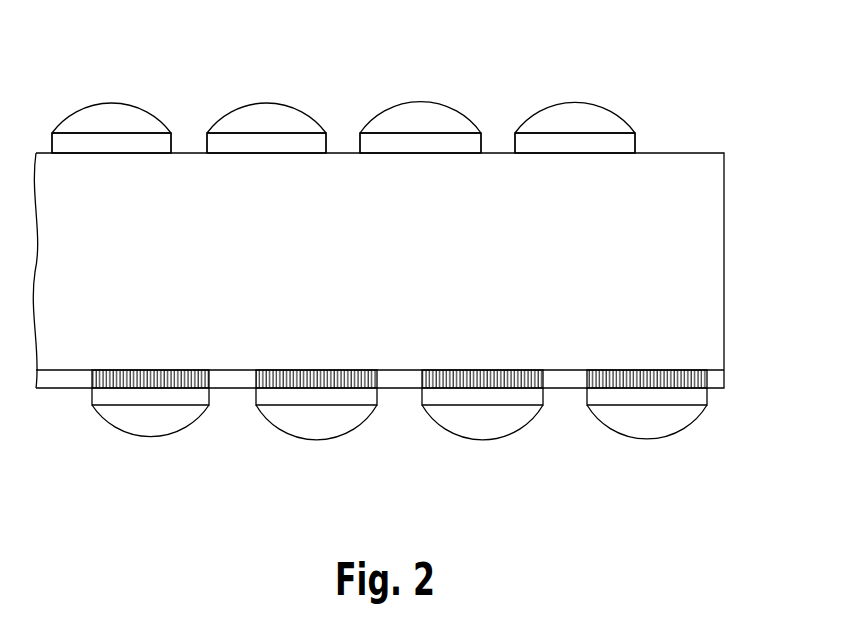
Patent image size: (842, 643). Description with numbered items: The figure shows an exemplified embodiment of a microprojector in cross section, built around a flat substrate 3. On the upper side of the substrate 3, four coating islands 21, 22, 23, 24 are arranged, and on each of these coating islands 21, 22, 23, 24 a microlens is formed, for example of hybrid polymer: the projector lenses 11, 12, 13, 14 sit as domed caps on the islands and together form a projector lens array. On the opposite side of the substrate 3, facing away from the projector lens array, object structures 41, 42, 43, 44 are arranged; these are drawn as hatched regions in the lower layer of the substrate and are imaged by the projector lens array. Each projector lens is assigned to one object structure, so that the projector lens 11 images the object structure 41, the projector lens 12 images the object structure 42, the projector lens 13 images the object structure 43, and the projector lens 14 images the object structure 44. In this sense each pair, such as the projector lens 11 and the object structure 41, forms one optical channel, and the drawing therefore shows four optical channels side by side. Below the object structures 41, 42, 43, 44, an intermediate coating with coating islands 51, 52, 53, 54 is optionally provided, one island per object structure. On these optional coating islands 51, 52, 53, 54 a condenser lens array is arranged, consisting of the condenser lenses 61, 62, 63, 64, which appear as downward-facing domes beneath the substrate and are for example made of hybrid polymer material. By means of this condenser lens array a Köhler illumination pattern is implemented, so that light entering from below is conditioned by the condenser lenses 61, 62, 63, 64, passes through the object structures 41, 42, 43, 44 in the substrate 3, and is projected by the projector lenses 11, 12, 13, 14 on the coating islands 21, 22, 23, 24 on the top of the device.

The substrate 3 is at (705, 272).
The projector lens 11 is at (107, 120).
The projector lens 12 is at (262, 120).
The projector lens 13 is at (415, 120).
The projector lens 14 is at (567, 120).
The coating island 21 is at (140, 145).
The coating island 22 is at (294, 145).
The coating island 23 is at (448, 145).
The coating island 24 is at (600, 145).
The object structure 41 is at (113, 389).
The object structure 42 is at (279, 389).
The object structure 43 is at (445, 389).
The object structure 44 is at (610, 389).
The coating island 51 is at (178, 394).
The coating island 52 is at (344, 394).
The coating island 53 is at (510, 394).
The coating island 54 is at (675, 394).
The condenser lens 61 is at (145, 425).
The condenser lens 62 is at (311, 425).
The condenser lens 63 is at (477, 425).
The condenser lens 64 is at (642, 425).